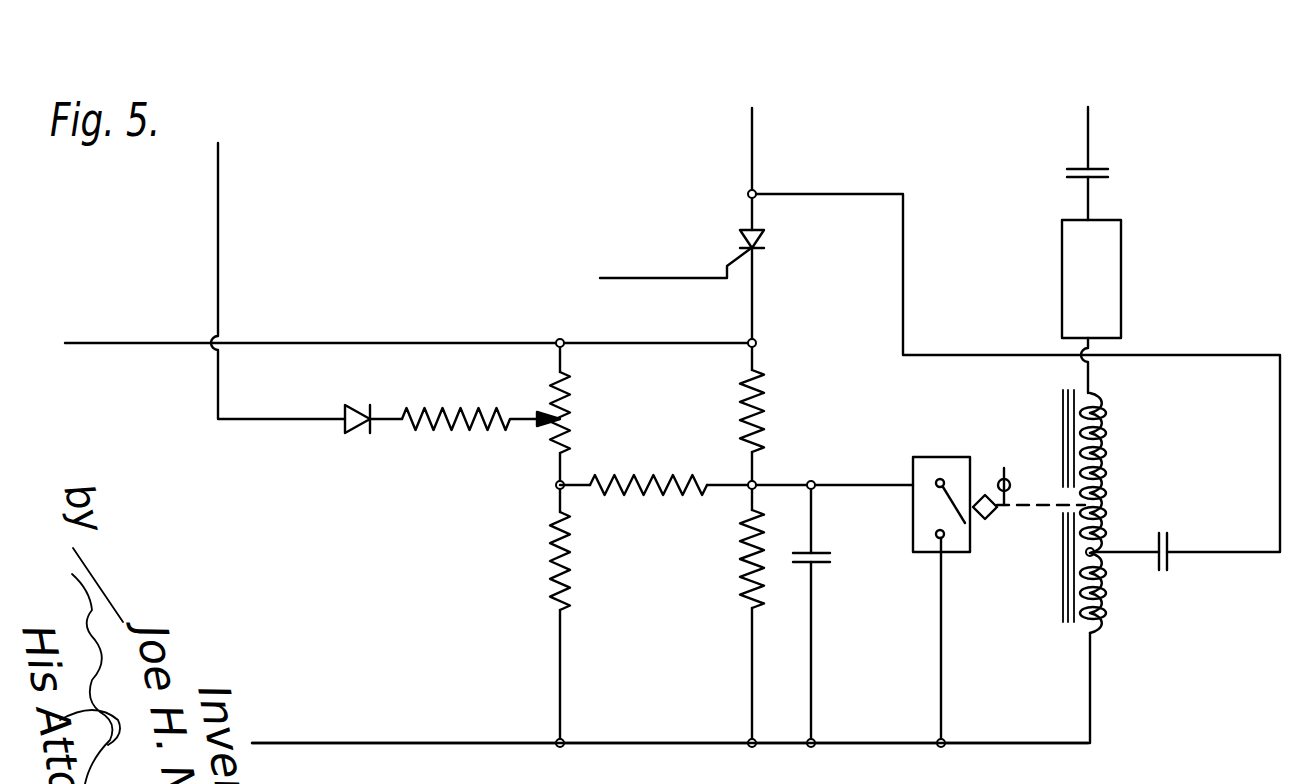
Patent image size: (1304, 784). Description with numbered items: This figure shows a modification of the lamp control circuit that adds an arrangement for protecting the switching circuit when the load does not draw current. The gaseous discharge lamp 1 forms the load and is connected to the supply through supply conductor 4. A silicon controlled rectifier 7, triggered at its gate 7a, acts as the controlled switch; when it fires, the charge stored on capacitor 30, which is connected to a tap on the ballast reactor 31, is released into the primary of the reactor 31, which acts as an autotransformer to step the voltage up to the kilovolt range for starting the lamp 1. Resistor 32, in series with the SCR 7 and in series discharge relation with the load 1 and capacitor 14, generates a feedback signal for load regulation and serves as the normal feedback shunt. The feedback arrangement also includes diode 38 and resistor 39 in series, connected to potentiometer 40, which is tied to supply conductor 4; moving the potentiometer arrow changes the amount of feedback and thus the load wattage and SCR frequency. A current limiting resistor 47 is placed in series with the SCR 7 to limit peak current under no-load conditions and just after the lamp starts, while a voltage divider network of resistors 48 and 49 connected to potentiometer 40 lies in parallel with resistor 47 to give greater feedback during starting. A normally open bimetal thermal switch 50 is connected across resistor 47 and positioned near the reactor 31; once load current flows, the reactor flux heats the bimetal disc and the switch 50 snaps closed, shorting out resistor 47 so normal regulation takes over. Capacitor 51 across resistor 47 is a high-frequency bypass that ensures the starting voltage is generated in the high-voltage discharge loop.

The lamp 1 is at (1124, 275).
The supply conductor 4 is at (405, 743).
The silicon controlled rectifier 7 is at (766, 240).
The gate electrode of controlled rectifier 7a is at (738, 250).
The capacitor 14 is at (1112, 172).
The capacitor 30 is at (1163, 580).
The ballast reactor 31 is at (1110, 478).
The resistor 32 is at (766, 405).
The diode 38 is at (352, 434).
The resistor 39 is at (458, 432).
The potentiometer 40 is at (568, 402).
The resistor 47 is at (740, 580).
The resistor 48 is at (548, 579).
The resistor 49 is at (642, 470).
The bimetal thermal switch 50 is at (913, 463).
The capacitor 51 is at (832, 560).